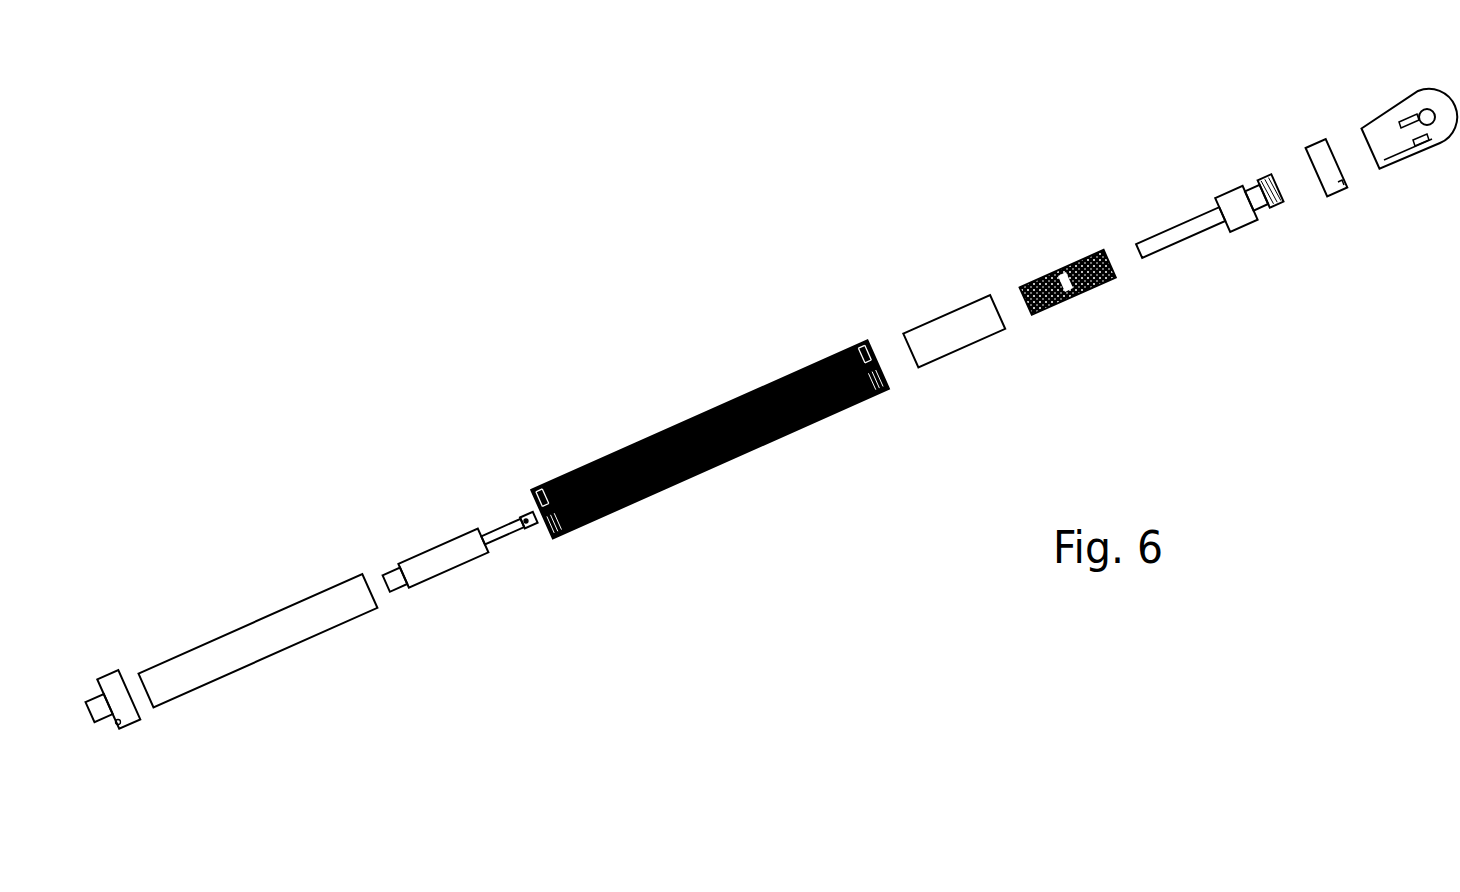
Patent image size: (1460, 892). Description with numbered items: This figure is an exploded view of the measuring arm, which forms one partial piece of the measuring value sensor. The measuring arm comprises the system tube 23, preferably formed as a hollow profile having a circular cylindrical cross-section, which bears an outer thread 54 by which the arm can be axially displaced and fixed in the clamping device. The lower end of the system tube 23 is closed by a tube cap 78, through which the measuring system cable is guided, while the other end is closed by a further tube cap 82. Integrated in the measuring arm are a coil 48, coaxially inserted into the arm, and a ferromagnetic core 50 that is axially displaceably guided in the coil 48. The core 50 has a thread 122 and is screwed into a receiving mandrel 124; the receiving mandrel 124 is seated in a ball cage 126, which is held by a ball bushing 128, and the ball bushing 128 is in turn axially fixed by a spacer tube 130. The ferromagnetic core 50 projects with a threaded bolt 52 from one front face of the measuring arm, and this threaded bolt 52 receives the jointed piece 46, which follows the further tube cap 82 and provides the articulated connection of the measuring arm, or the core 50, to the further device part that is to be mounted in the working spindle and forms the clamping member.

The system tube 23 is at (708, 398).
The jointed piece 46 is at (1388, 125).
The coil 48 is at (437, 556).
The ferromagnetic core 50 is at (502, 527).
The threaded bolt 52 is at (1270, 187).
The outer thread 54 is at (803, 365).
The tube cap 78 is at (118, 690).
The further tube cap 82 is at (1315, 153).
The thread 122 is at (521, 517).
The receiving mandrel 124 is at (1197, 228).
The ball cage 126 is at (1067, 283).
The ball bushing 128 is at (953, 328).
The spacer tube 130 is at (298, 613).